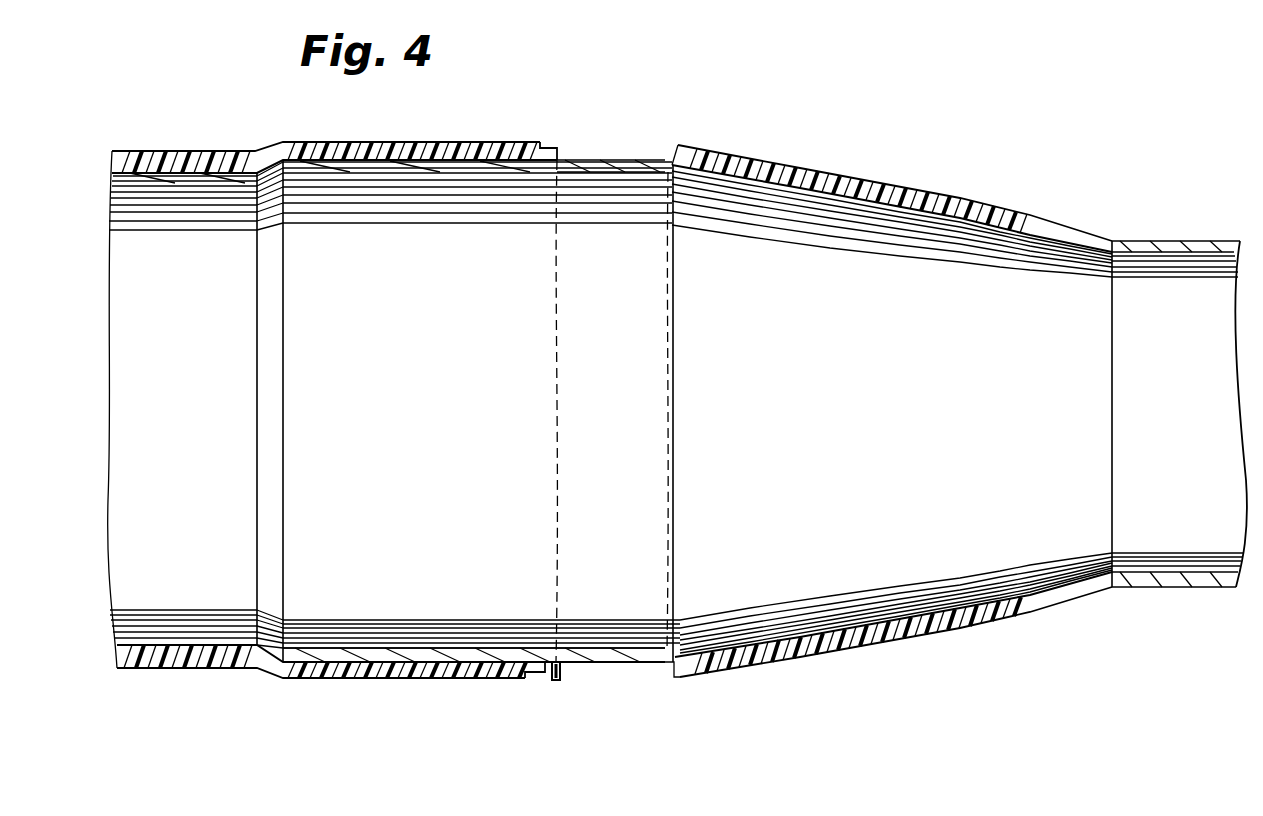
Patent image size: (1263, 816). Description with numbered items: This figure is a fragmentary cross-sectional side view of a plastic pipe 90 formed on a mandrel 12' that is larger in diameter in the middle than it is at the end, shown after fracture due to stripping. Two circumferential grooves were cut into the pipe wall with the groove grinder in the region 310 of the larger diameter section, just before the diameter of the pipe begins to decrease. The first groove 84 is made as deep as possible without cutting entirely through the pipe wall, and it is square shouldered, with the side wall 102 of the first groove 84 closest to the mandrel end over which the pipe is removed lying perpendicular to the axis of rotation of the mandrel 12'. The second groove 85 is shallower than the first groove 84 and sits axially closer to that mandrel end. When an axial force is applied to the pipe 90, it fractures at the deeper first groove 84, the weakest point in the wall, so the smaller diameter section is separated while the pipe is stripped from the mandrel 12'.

The mandrel 12' is at (652, 409).
The first groove 84 is at (674, 162).
The second groove 85 is at (548, 148).
The plastic pipe 90 is at (391, 678).
The side wall of the first groove 102 is at (560, 684).
The region of the larger diameter section 310 is at (640, 158).